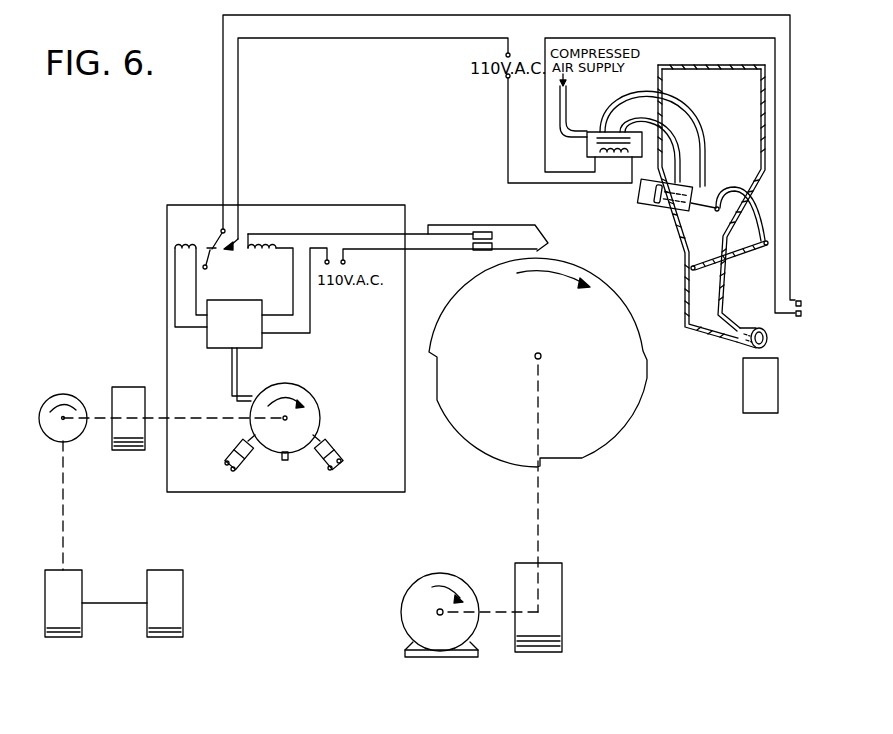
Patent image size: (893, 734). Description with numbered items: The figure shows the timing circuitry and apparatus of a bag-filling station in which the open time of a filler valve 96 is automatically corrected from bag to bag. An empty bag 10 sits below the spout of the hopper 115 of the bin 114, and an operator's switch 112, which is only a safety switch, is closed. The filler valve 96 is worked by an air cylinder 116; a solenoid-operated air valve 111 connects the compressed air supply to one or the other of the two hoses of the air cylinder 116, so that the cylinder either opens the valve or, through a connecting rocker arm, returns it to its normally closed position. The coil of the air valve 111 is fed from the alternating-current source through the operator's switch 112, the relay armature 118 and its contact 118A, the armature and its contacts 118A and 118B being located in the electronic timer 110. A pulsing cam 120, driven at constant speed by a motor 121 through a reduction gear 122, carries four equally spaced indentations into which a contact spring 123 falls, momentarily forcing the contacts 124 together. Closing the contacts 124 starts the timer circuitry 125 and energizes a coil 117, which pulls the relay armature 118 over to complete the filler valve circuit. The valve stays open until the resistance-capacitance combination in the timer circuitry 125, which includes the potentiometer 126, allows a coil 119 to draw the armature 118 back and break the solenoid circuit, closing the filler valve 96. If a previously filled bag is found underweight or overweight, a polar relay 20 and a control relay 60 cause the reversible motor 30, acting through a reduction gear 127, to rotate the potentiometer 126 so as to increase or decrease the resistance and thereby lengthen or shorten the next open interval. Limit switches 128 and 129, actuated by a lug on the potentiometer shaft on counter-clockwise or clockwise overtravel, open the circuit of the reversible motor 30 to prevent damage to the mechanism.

The bag 10 is at (779, 383).
The polar relay 20 is at (167, 573).
The reversible motor 30 is at (60, 393).
The control relay 60 is at (72, 575).
The filler valve 96 is at (745, 258).
The electronic timer 110 is at (305, 492).
The solenoid-operated air valve 111 is at (588, 130).
The operator's switch 112 is at (820, 309).
The bin 114 is at (693, 65).
The hopper 115 is at (713, 340).
The air cylinder 116 is at (692, 190).
The coil 117 is at (266, 252).
The relay armature 118 is at (217, 250).
The contact 118A is at (227, 250).
The contact 118B is at (208, 236).
The coil 119 is at (189, 267).
The pulsing cam 120 is at (603, 427).
The motor 121 is at (437, 572).
The reduction gear 122 is at (557, 580).
The contact spring 123 is at (543, 232).
The contacts 124 is at (500, 242).
The timer circuitry 125 is at (234, 324).
The potentiometer 126 is at (318, 398).
The reduction gear 127 is at (117, 387).
The limit switch 128 is at (234, 448).
The limit switch 129 is at (334, 450).